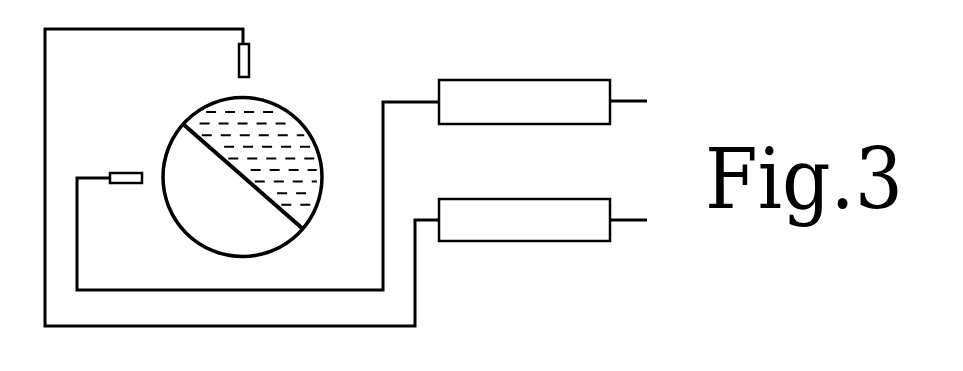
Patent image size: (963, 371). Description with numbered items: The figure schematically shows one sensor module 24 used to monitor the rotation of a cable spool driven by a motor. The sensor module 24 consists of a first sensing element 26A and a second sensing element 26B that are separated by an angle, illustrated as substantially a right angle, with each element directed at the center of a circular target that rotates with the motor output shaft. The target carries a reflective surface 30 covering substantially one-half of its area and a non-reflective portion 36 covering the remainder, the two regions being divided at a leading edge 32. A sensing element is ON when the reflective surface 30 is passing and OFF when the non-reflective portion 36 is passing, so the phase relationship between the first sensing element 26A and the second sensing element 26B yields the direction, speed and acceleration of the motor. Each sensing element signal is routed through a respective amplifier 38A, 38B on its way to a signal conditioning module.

The sensor module 24 is at (372, 80).
The first sensing element 26A is at (115, 172).
The second sensing element 26B is at (243, 60).
The reflective surface 30 is at (290, 153).
The leading edge 32 is at (260, 193).
The non-reflective portion 36 is at (195, 218).
The amplifier 38A is at (507, 80).
The amplifier 38B is at (510, 242).